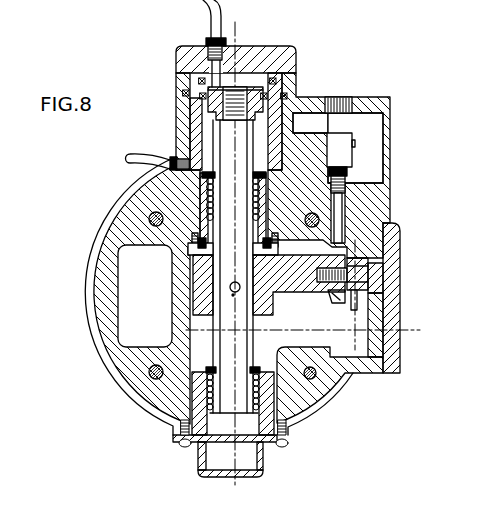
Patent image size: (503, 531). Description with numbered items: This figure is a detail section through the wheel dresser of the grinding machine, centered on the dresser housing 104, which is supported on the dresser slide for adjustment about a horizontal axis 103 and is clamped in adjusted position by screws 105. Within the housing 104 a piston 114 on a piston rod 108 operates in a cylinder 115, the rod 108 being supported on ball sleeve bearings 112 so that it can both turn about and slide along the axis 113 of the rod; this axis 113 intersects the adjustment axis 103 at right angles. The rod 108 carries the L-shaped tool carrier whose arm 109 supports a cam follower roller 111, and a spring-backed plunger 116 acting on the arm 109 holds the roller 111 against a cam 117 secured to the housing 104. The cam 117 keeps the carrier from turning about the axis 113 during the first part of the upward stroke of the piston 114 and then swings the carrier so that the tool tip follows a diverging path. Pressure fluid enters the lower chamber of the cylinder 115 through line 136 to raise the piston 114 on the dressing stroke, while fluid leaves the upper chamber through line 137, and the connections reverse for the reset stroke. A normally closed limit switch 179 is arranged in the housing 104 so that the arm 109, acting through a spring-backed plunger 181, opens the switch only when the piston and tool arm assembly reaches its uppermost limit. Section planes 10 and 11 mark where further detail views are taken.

The section plane 10- 10 is at (412, 322).
The section plane 11- 11 is at (348, 342).
The horizontal axis 103 is at (235, 296).
The dresser housing 104 is at (312, 400).
The screws 105 is at (150, 378).
The piston rod 108 is at (226, 337).
The arm of tool carrier 109 is at (294, 283).
The cam follower roller 111 is at (362, 262).
The ball sleeve bearings 112 is at (192, 204).
The axis of the rod 113 is at (233, 482).
The piston 114 is at (208, 111).
The cylinder 115 is at (274, 116).
The spring-backed plunger 116 is at (335, 290).
The cam 117 is at (392, 352).
The passage and line 136 is at (140, 166).
The line and passage 137 is at (212, 21).
The limit switch 179 is at (338, 146).
The spring-backed plunger 181 is at (340, 218).